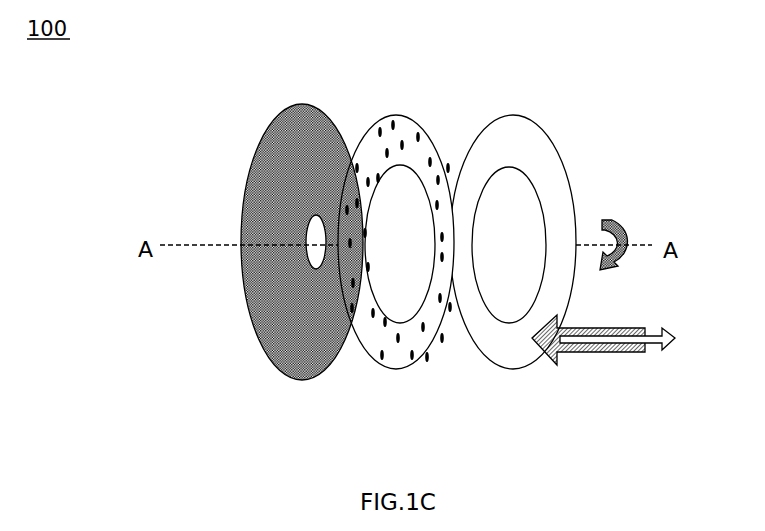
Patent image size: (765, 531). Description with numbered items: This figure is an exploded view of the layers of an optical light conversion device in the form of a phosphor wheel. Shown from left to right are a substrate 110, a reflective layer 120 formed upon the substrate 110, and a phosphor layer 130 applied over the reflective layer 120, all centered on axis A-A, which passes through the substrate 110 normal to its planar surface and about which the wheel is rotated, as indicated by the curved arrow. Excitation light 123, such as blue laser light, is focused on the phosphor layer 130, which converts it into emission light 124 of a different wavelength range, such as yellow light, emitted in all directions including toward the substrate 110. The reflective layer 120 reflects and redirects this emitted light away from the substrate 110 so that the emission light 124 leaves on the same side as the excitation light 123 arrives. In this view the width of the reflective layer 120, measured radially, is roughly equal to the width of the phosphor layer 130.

The substrate 110 is at (251, 328).
The reflective layer 120 is at (431, 118).
The phosphor layer 130 is at (551, 133).
The excitation light 123 is at (580, 352).
The emission light 124 is at (655, 348).